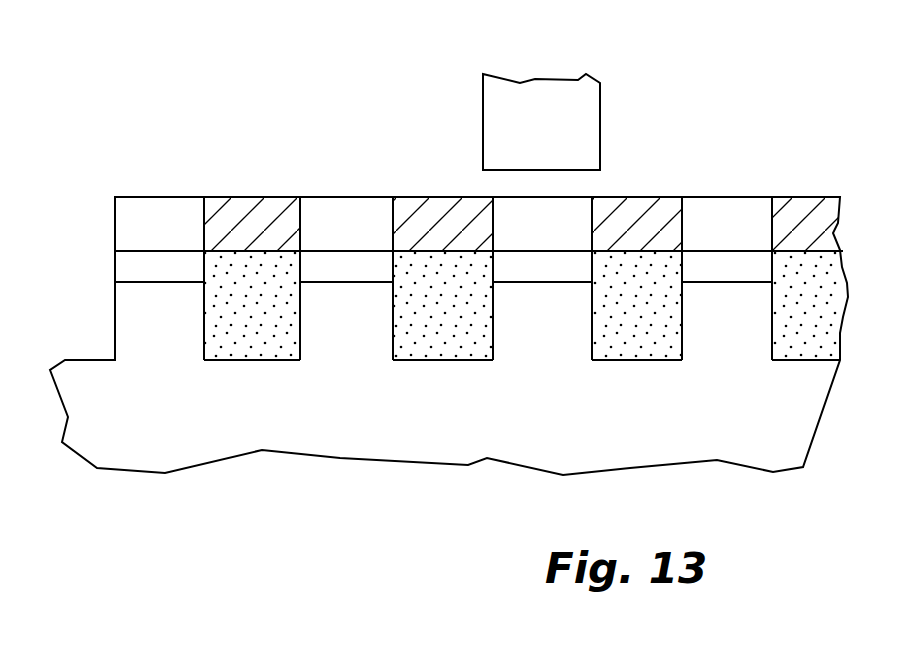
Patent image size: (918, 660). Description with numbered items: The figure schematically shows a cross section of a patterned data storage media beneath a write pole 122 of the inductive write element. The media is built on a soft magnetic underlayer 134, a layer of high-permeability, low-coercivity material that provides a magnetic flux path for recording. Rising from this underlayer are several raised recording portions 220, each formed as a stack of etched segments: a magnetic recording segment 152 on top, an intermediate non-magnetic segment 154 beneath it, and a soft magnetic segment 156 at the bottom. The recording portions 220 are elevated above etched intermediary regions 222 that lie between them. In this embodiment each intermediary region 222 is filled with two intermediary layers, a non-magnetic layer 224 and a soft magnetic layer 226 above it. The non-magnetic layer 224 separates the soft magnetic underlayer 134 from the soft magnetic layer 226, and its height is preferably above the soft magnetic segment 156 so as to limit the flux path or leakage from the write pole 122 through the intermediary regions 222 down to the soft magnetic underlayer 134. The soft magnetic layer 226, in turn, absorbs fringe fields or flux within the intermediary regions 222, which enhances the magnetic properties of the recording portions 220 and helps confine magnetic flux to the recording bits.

The write pole 122 is at (600, 100).
The soft magnetic underlayer 134 is at (778, 432).
The magnetic recording segment 152 is at (747, 234).
The intermediate non-magnetic segment 154 is at (747, 277).
The soft magnetic segment 156 is at (749, 346).
The recording portion 220 is at (717, 197).
The intermediary region 222 is at (284, 318).
The non-magnetic layer 224 is at (830, 293).
The soft magnetic layer 226 is at (805, 212).